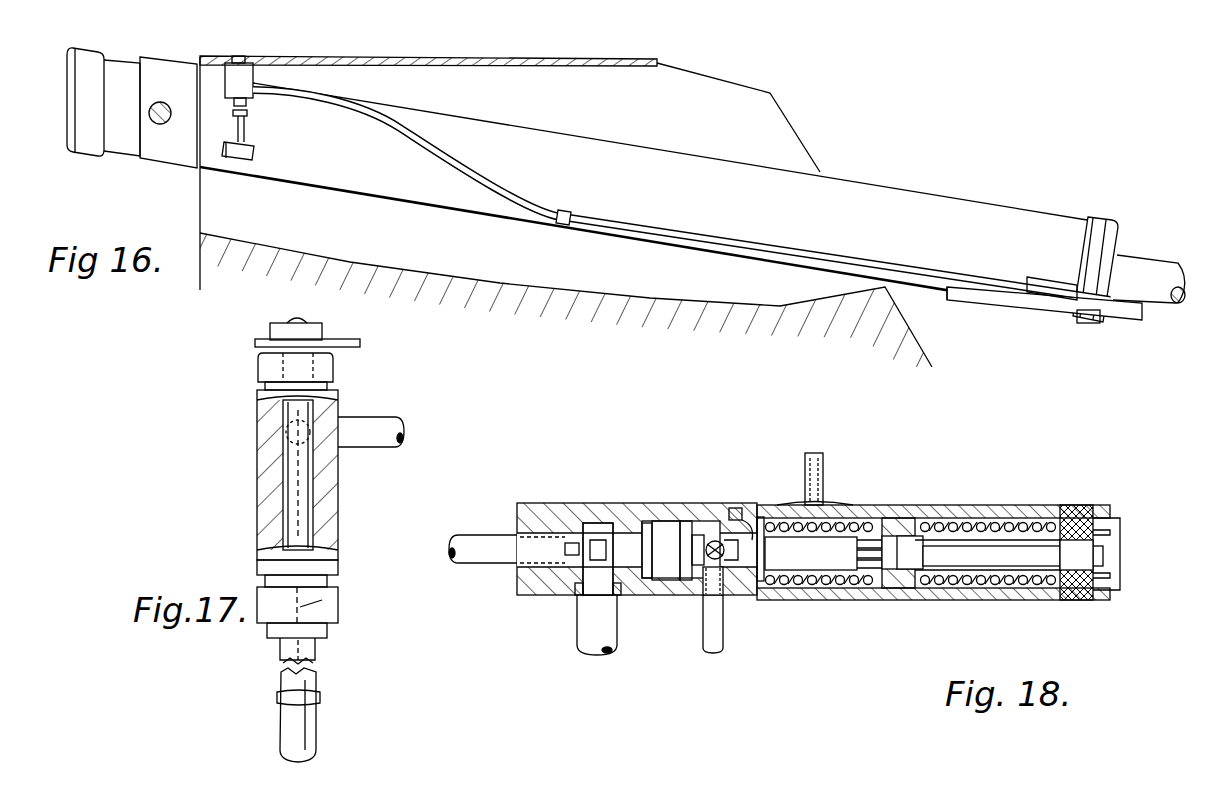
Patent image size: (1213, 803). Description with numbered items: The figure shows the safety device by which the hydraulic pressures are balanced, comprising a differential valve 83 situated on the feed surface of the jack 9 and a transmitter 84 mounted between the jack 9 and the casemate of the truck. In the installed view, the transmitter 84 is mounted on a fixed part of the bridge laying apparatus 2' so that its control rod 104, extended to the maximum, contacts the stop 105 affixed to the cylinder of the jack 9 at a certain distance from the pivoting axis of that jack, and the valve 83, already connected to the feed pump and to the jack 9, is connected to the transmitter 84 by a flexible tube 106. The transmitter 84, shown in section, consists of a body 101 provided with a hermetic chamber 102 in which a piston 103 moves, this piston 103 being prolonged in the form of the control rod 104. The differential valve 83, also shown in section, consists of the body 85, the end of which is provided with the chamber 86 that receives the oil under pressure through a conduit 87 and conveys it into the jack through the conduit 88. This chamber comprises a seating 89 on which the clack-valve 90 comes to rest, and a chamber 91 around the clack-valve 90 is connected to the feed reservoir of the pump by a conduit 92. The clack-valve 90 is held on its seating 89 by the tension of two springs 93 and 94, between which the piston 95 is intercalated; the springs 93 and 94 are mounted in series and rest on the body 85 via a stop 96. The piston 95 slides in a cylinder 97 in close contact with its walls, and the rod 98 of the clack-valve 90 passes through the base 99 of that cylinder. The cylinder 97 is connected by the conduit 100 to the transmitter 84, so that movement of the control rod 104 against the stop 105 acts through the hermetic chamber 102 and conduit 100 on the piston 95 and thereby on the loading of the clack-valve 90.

In FIG. 16, the bridge laying apparatus 2' is at (428, 43).
In FIG. 16, the jack 9 is at (903, 204).
In FIG. 16, the differential valve 83 is at (1117, 318).
In FIG. 18, the differential valve 83 is at (966, 494).
In FIG. 16, the transmitter 84 is at (247, 78).
In FIG. 17, the transmitter 84 is at (270, 437).
In FIG. 18, the body 85 is at (526, 587).
In FIG. 18, the chamber 86 is at (593, 522).
In FIG. 18, the conduit 87 is at (487, 549).
In FIG. 18, the conduit 88 is at (588, 638).
In FIG. 18, the seating 89 is at (658, 578).
In FIG. 18, the clack-valve 90 is at (735, 572).
In FIG. 18, the chamber 91 is at (703, 574).
In FIG. 18, the conduit 92 is at (722, 633).
In FIG. 18, the spring 93 is at (858, 586).
In FIG. 18, the spring 94 is at (1008, 586).
In FIG. 18, the piston 95 is at (893, 588).
In FIG. 18, the stop 96 is at (1076, 594).
In FIG. 18, the cylinder 97 is at (823, 588).
In FIG. 18, the rod 98 is at (760, 518).
In FIG. 18, the base 99 is at (738, 508).
In FIG. 16, the conduit 100 is at (948, 289).
In FIG. 18, the conduit 100 is at (818, 468).
In FIG. 17, the body 101 is at (327, 513).
In FIG. 17, the hermetic chamber 102 is at (310, 478).
In FIG. 17, the piston 103 is at (303, 605).
In FIG. 17, the control rod 104 is at (307, 653).
In FIG. 16, the stop 105 is at (240, 155).
In FIG. 16, the flexible tube 106 is at (465, 137).
In FIG. 17, the flexible tube 106 is at (375, 427).